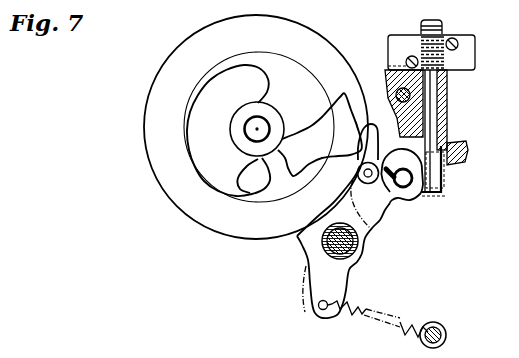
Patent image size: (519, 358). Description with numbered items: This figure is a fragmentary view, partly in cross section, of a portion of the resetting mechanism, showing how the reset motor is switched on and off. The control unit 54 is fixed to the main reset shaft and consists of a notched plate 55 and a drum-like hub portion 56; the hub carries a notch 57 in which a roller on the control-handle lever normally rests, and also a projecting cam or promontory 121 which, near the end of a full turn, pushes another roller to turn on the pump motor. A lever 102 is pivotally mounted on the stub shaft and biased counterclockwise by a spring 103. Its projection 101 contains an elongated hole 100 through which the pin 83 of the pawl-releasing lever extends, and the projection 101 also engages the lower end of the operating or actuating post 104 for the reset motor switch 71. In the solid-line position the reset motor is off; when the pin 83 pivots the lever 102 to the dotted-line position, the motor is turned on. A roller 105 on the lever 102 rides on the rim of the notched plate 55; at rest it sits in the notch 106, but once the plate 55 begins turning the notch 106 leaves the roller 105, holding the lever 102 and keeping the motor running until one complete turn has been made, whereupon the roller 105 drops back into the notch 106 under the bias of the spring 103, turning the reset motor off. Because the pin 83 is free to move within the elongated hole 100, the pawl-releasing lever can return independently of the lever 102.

The control unit 54 is at (205, 231).
The notched plate 55 is at (256, 130).
The drum-like hub portion 56 is at (196, 173).
The notch 57 is at (294, 174).
The projecting cam or promontory 121 is at (343, 150).
The notch 106 is at (356, 154).
The roller 105 is at (366, 128).
The pin 83 is at (401, 167).
The elongated hole 100 is at (361, 222).
The lever 102 is at (366, 232).
The spring 103 is at (402, 317).
The projection 101 is at (445, 177).
The operating or actuating post 104 is at (454, 121).
The reset motor switch 71 is at (474, 62).